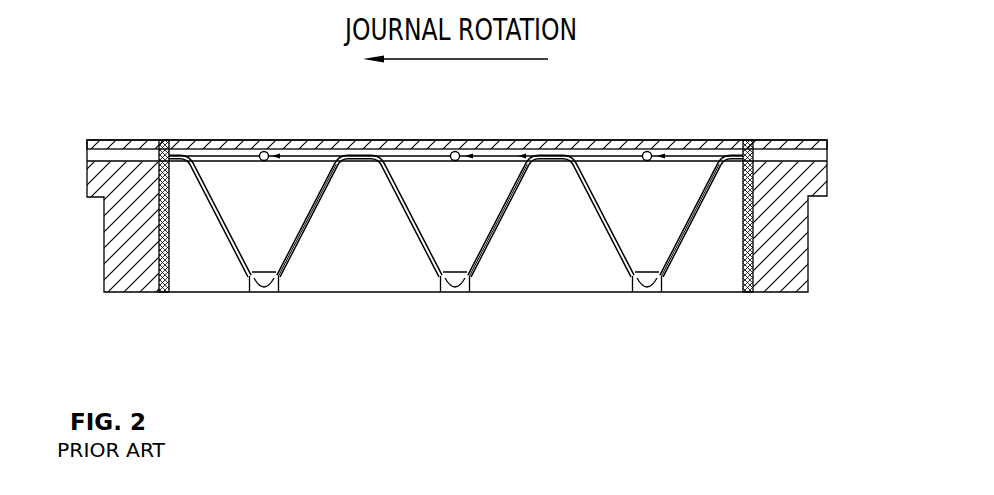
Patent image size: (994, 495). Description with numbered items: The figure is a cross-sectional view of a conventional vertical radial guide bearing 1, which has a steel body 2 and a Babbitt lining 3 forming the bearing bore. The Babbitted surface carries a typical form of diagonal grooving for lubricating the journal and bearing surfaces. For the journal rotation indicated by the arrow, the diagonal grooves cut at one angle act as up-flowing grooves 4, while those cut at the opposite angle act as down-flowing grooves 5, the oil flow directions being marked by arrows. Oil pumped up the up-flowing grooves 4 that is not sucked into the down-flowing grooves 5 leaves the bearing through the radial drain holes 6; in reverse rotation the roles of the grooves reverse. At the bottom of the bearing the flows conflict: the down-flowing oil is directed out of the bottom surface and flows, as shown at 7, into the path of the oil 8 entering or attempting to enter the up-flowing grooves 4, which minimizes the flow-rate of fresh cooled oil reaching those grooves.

The vertical radial guide bearing 1 is at (763, 113).
The steel body 2 is at (808, 140).
The Babbitt lining 3 is at (172, 160).
The up-flowing grooves 4 is at (215, 183).
The down-flowing grooves 5 is at (292, 252).
The radial drain holes 6 is at (268, 151).
The down-flowing oil flow 7 is at (261, 302).
The oil entering up-flowing grooves 8 is at (279, 303).